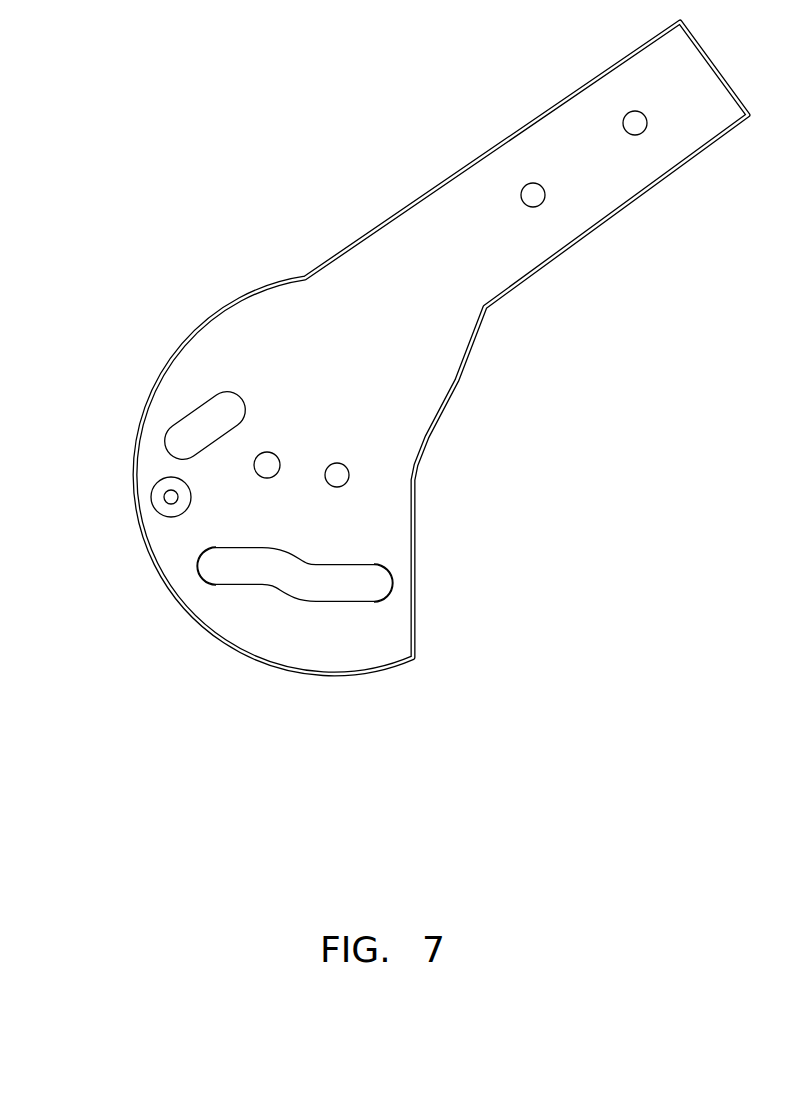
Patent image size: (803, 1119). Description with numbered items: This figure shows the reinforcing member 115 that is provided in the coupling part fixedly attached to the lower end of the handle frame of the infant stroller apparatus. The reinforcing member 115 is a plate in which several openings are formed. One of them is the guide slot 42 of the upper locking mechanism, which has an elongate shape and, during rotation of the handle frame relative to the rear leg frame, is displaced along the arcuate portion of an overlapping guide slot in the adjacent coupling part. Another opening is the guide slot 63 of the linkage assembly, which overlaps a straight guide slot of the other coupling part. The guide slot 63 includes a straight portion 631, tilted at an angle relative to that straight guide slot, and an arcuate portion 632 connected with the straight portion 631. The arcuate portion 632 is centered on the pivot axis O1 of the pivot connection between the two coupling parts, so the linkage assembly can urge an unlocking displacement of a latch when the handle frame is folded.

The reinforcing member 115 is at (232, 62).
The guide slot 42 is at (202, 428).
The pivot axis O1 is at (337, 475).
The guide slot 63 is at (295, 675).
The straight portion 631 is at (233, 567).
The arcuate portion 632 is at (350, 586).